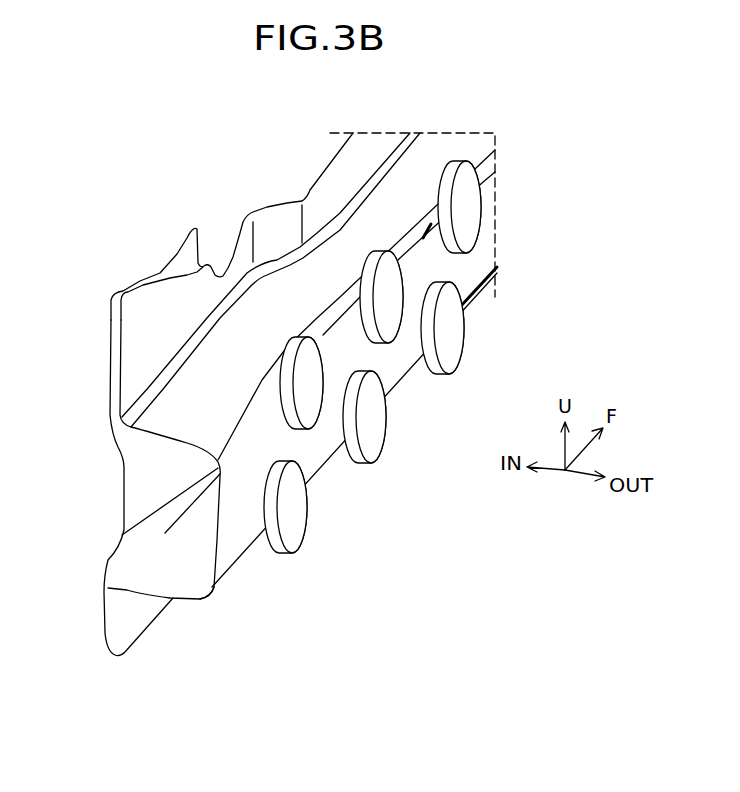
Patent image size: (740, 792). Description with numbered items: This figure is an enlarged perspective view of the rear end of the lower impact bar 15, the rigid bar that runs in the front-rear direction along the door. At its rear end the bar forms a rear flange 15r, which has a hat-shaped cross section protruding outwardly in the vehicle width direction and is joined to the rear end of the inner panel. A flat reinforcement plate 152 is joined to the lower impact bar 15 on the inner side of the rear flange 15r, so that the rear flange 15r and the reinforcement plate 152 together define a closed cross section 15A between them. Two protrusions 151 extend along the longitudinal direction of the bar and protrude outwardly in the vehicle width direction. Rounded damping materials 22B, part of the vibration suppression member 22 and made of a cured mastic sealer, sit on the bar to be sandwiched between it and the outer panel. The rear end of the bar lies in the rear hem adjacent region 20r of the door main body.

The lower impact bar 15 is at (320, 398).
The closed cross section 15A is at (178, 477).
The rear flange 15r is at (227, 604).
The protrusions 151 is at (425, 236).
The reinforcement plate 152 is at (120, 500).
The rear hem adjacent region 20r is at (410, 501).
The vibration suppression member 22 is at (434, 357).
The damping materials 22B is at (390, 435).